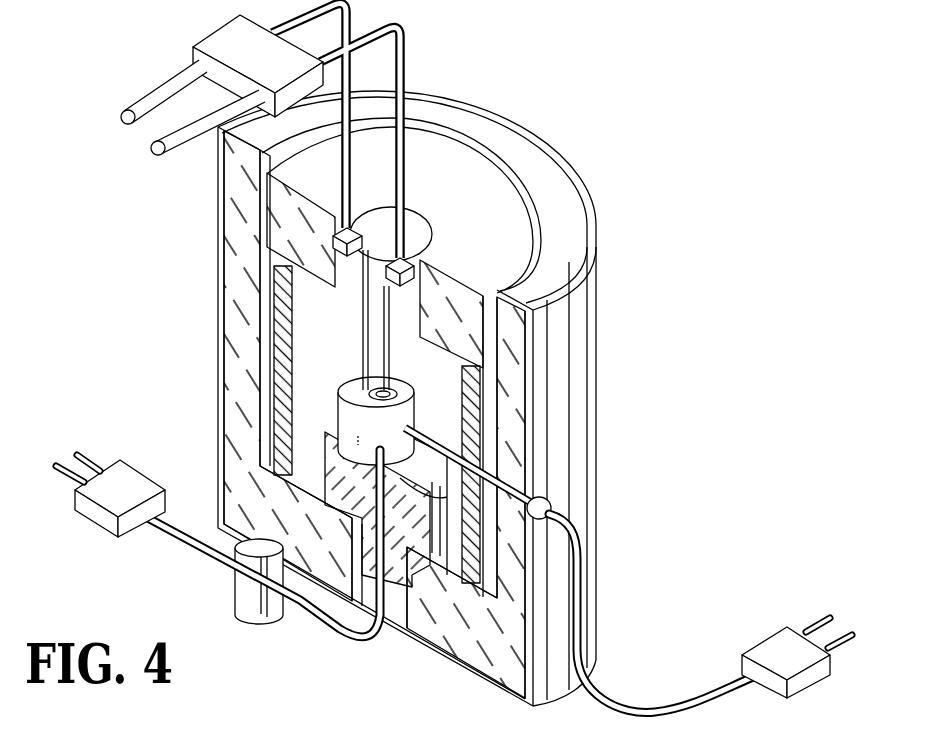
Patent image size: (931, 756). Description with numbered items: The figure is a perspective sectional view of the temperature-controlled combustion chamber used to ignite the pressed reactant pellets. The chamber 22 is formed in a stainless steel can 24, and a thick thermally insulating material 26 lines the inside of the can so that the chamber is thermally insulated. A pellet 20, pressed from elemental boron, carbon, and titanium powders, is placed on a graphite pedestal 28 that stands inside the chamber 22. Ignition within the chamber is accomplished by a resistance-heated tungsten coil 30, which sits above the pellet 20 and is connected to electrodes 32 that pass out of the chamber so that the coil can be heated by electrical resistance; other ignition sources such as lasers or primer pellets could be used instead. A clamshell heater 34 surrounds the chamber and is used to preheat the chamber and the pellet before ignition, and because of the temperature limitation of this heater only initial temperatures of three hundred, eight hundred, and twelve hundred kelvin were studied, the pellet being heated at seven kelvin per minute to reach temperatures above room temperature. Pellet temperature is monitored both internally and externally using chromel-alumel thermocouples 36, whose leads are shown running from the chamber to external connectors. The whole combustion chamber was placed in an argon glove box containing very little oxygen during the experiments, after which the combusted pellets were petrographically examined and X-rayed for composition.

The pellet 20 is at (340, 413).
The chamber 22 is at (454, 398).
The stainless steel can 24 is at (597, 387).
The thermally insulating material 26 is at (480, 643).
The graphite pedestal 28 is at (338, 467).
The resistance-heated tungsten coil 30 is at (363, 327).
The electrodes 32 is at (402, 30).
The clamshell heater 34 is at (483, 440).
The chromel-alumel thermocouples 36 is at (104, 536).